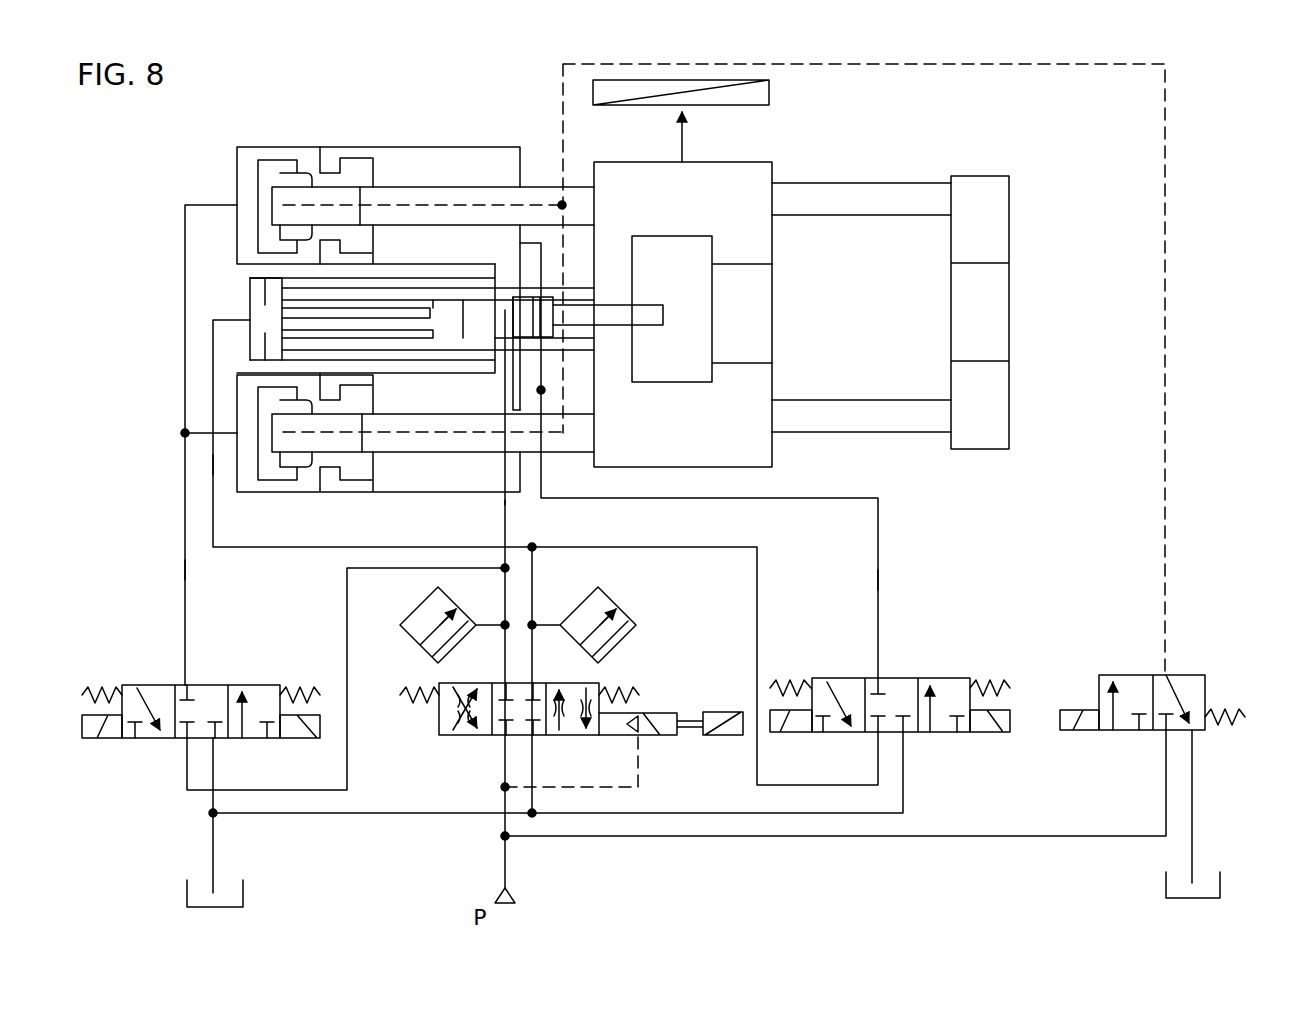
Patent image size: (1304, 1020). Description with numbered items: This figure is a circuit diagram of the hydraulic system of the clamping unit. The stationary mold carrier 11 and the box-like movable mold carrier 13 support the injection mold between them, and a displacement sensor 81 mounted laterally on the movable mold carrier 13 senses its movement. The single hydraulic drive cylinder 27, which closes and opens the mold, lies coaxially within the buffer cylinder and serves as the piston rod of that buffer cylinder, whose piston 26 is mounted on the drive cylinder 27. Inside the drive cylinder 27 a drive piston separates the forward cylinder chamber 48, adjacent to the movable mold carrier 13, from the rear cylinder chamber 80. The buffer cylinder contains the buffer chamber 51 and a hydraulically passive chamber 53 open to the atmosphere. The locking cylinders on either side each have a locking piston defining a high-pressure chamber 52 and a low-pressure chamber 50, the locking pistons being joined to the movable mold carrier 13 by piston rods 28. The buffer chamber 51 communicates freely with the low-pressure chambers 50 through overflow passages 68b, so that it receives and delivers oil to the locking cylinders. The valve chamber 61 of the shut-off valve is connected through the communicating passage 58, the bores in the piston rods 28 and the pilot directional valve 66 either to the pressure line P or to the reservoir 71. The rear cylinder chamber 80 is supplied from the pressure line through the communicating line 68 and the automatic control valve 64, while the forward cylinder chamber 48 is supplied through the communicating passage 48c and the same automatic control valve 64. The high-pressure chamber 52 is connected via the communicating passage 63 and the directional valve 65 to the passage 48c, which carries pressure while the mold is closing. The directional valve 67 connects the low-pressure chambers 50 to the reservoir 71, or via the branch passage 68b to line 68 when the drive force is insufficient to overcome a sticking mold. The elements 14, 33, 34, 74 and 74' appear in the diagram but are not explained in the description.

The stationary mold carrier 11 is at (1000, 235).
The movable mold carrier 13 is at (693, 209).
The tie rods 14 is at (877, 203).
The piston 26 is at (268, 280).
The hydraulic drive cylinder 27 is at (503, 310).
The piston rods 28 is at (440, 197).
The coupling 33 is at (548, 307).
The spindle 34 is at (640, 303).
The forward cylinder chamber 48 is at (483, 320).
The communicating passage 48c is at (505, 502).
The low-pressure chamber 50 is at (395, 160).
The buffer chamber 51 is at (355, 280).
The high-pressure chamber 52 is at (245, 178).
The hydraulically passive chamber 53 is at (268, 288).
The communicating passage 58 is at (1165, 438).
The valve chamber 61 is at (280, 183).
The communicating passage 63 is at (185, 570).
The automatic control valve 64 is at (440, 741).
The directional valve 65 is at (147, 744).
The directional valve 66 is at (1098, 736).
The directional valve 67 is at (946, 739).
The communicating line 68 is at (247, 463).
The communicating branch passage 68b is at (878, 580).
The reservoir 71 is at (230, 888).
The check valve 74 is at (401, 625).
The check valve 74' is at (620, 613).
The rear cylinder chamber 80 is at (303, 295).
The displacement sensor 81 is at (745, 95).